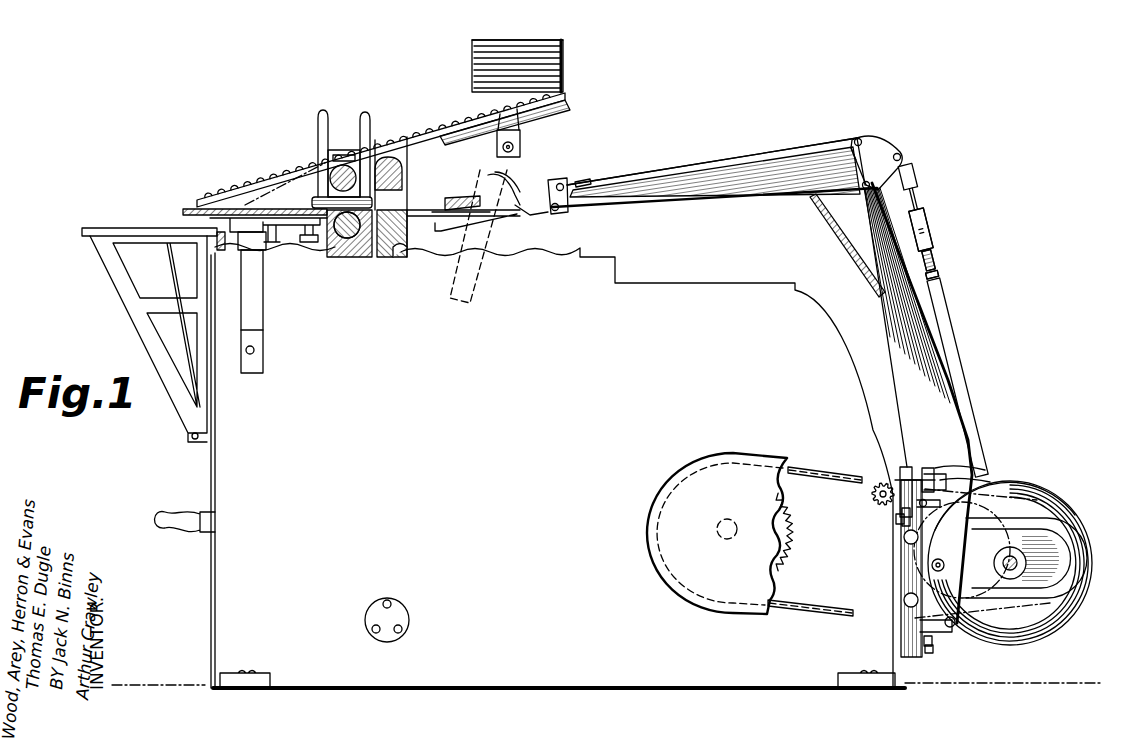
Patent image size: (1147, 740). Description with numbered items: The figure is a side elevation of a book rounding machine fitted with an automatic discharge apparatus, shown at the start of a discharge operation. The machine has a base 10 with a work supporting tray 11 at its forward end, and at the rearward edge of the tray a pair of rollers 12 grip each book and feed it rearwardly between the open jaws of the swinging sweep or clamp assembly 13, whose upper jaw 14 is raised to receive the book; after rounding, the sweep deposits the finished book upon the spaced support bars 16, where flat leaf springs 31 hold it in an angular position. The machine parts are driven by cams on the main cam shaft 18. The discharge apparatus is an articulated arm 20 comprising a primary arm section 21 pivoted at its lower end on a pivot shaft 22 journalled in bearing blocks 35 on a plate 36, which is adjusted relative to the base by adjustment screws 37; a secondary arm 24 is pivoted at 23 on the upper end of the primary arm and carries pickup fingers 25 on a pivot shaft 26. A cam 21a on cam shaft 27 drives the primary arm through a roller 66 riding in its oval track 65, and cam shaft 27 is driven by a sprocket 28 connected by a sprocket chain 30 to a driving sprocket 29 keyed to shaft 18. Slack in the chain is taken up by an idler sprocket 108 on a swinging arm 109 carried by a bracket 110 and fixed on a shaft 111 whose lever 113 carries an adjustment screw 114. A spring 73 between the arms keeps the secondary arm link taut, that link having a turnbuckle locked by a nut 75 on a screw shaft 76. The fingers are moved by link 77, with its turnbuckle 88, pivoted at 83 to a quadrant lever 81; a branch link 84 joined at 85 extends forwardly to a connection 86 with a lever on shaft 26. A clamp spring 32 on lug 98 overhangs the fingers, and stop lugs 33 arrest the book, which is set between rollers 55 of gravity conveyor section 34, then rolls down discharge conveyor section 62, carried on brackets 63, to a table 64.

The base 10 is at (235, 469).
The work supporting tray 11 is at (240, 208).
The rollers 12 is at (335, 178).
The sweep or clamp assembly 13 is at (404, 182).
The upper jaw 14 is at (390, 155).
The support bars 16 is at (420, 217).
The cam shaft 18 is at (719, 539).
The articulated arm 20 is at (930, 333).
The primary arm section 21 is at (935, 397).
The cam 21a is at (1040, 510).
The pivot shaft 22 is at (953, 632).
The pivot shaft 23 is at (885, 156).
The secondary arm 24 is at (700, 185).
The pickup fingers 25 is at (512, 226).
The pivot shaft 26 is at (562, 212).
The cam shaft 27 is at (1026, 562).
The sprocket 28 is at (1070, 616).
The driving sprocket 29 is at (788, 545).
The sprocket chain 30 is at (823, 474).
The flat leaf springs 31 is at (440, 199).
The clamp spring 32 is at (533, 182).
The stop lugs 33 is at (522, 212).
The gravity conveyor section 34 is at (534, 52).
The bearing blocks 35 is at (940, 640).
The plate 36 is at (905, 638).
The adjustment screws 37 is at (895, 520).
The rollers 55 is at (480, 40).
The discharge conveyor section 62 is at (438, 132).
The brackets 63 is at (522, 141).
The table 64 is at (125, 230).
The oval track 65 is at (1062, 529).
The roller 66 is at (945, 563).
The spring 73 is at (850, 260).
The nut 75 is at (956, 270).
The screw shaft 76 is at (952, 251).
The link 77 is at (977, 312).
The quadrant lever 81 is at (902, 150).
The pivot connection 83 is at (901, 158).
The branch link 84 is at (768, 155).
The pivot connection 85 is at (857, 138).
The pivot connection 86 is at (562, 183).
The turnbuckle 88 is at (942, 222).
The lug 98 is at (585, 178).
The idler sprocket 108 is at (871, 500).
The swinging arm 109 is at (906, 526).
The bracket 110 is at (906, 467).
The shaft 111 is at (942, 505).
The lever 113 is at (930, 468).
The adjustment screw 114 is at (986, 469).